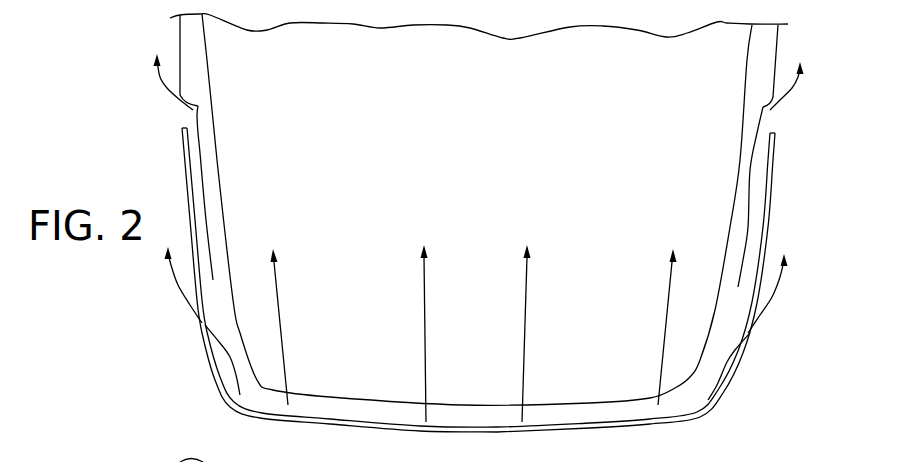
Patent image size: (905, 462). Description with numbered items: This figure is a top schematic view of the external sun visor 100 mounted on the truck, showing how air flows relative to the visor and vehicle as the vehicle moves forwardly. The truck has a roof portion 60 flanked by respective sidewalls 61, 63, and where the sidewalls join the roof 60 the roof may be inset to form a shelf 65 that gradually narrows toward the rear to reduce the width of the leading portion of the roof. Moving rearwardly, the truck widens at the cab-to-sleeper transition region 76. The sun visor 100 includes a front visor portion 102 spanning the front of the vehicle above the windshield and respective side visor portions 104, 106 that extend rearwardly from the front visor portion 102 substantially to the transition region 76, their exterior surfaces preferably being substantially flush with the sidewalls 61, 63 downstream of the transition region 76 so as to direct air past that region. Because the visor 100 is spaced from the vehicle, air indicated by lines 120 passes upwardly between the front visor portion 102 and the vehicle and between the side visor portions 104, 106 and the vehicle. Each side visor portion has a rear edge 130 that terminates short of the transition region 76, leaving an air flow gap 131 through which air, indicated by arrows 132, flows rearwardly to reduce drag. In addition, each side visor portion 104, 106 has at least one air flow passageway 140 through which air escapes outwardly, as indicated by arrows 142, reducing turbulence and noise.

The roof portion 60 is at (492, 137).
The sidewall 61 is at (180, 32).
The sidewall 63 is at (778, 48).
The shelf 65 is at (192, 50).
The cab-to-sleeper transition region 76 is at (185, 105).
The external sun visor 100 is at (746, 408).
The front visor portion 102 is at (473, 433).
The side visor portion 104 is at (182, 193).
The side visor portion 106 is at (770, 202).
The air 120 is at (424, 328).
The rear edge 130 is at (182, 128).
The air flow gap 131 is at (205, 112).
The air flow arrows 132 is at (162, 88).
The air flow passageway 140 is at (200, 337).
The air flow arrows 142 is at (170, 290).